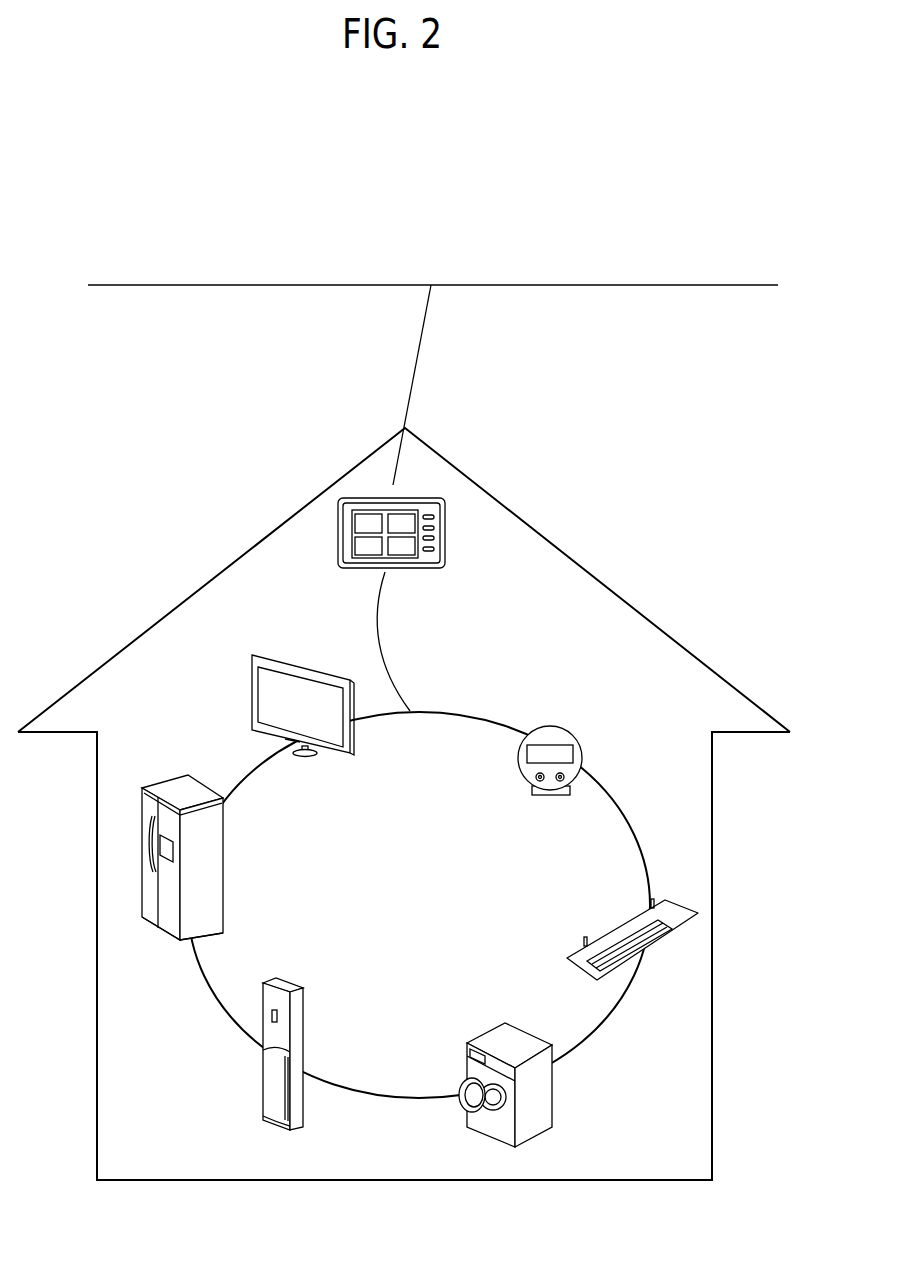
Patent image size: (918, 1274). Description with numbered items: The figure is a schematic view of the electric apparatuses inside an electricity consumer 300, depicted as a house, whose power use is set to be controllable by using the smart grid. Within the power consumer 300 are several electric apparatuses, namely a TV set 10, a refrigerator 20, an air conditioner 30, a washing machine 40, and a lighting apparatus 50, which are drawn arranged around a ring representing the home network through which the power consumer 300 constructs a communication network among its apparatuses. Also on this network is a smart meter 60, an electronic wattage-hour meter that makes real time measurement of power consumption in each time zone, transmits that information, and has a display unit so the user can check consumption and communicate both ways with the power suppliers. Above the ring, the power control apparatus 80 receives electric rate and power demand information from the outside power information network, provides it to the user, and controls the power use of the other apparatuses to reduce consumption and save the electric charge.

The power consumer 300 is at (586, 528).
The power control apparatus 80 is at (412, 498).
The TV set 10 is at (252, 690).
The refrigerator 20 is at (157, 927).
The air conditioner 30 is at (303, 1103).
The washing machine 40 is at (553, 1107).
The lighting apparatus 50 is at (652, 953).
The smart meter 60 is at (572, 733).